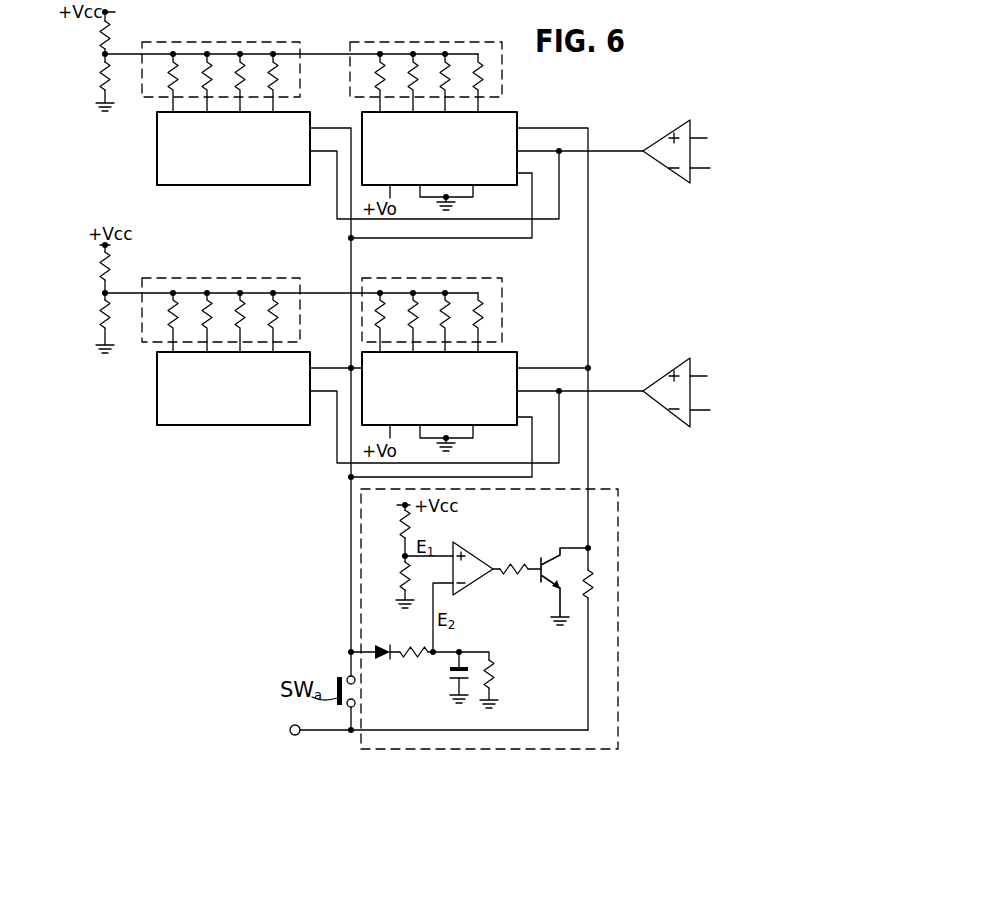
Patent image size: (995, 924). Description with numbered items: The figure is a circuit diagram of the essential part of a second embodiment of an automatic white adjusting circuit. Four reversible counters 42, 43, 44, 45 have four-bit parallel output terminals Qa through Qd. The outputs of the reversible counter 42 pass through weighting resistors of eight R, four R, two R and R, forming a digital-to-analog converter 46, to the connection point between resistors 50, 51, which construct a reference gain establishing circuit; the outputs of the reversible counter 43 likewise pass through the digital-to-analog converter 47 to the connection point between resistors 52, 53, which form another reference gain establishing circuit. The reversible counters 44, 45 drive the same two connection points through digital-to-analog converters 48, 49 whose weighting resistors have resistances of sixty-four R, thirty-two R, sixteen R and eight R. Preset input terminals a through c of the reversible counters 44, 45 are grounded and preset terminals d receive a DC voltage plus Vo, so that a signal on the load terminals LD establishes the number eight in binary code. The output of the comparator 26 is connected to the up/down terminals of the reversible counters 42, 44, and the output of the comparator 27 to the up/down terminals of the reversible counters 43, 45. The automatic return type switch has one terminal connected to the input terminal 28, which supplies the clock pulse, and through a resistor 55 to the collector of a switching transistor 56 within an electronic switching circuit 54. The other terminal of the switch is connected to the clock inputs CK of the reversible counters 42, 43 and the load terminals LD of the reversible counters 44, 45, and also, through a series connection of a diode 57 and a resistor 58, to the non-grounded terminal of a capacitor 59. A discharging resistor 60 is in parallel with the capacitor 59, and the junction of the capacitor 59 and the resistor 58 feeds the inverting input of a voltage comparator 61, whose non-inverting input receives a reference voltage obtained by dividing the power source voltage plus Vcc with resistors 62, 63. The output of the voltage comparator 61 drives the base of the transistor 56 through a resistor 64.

The comparator 26 is at (663, 377).
The comparator 27 is at (668, 135).
The input terminal 28 is at (292, 728).
The reversible counter 42 is at (222, 425).
The reversible counter 43 is at (157, 145).
The reversible counter 44 is at (519, 381).
The reversible counter 45 is at (517, 115).
The digital-to-analog converter 46 is at (175, 278).
The digital-to-analog converter 47 is at (167, 42).
The digital-to-analog converter 48 is at (392, 278).
The digital-to-analog converter 49 is at (382, 42).
The resistor 50 is at (98, 265).
The resistor 51 is at (98, 314).
The resistor 52 is at (98, 33).
The resistor 53 is at (98, 70).
The electronic switching circuit 54 is at (619, 541).
The resistor 55 is at (591, 583).
The switching transistor 56 is at (552, 591).
The diode 57 is at (383, 670).
The resistor 58 is at (414, 636).
The capacitor 59 is at (454, 675).
The discharging resistor 60 is at (493, 686).
The voltage comparator 61 is at (472, 559).
The resistor 62 is at (402, 530).
The resistor 63 is at (402, 576).
The resistor 64 is at (510, 567).